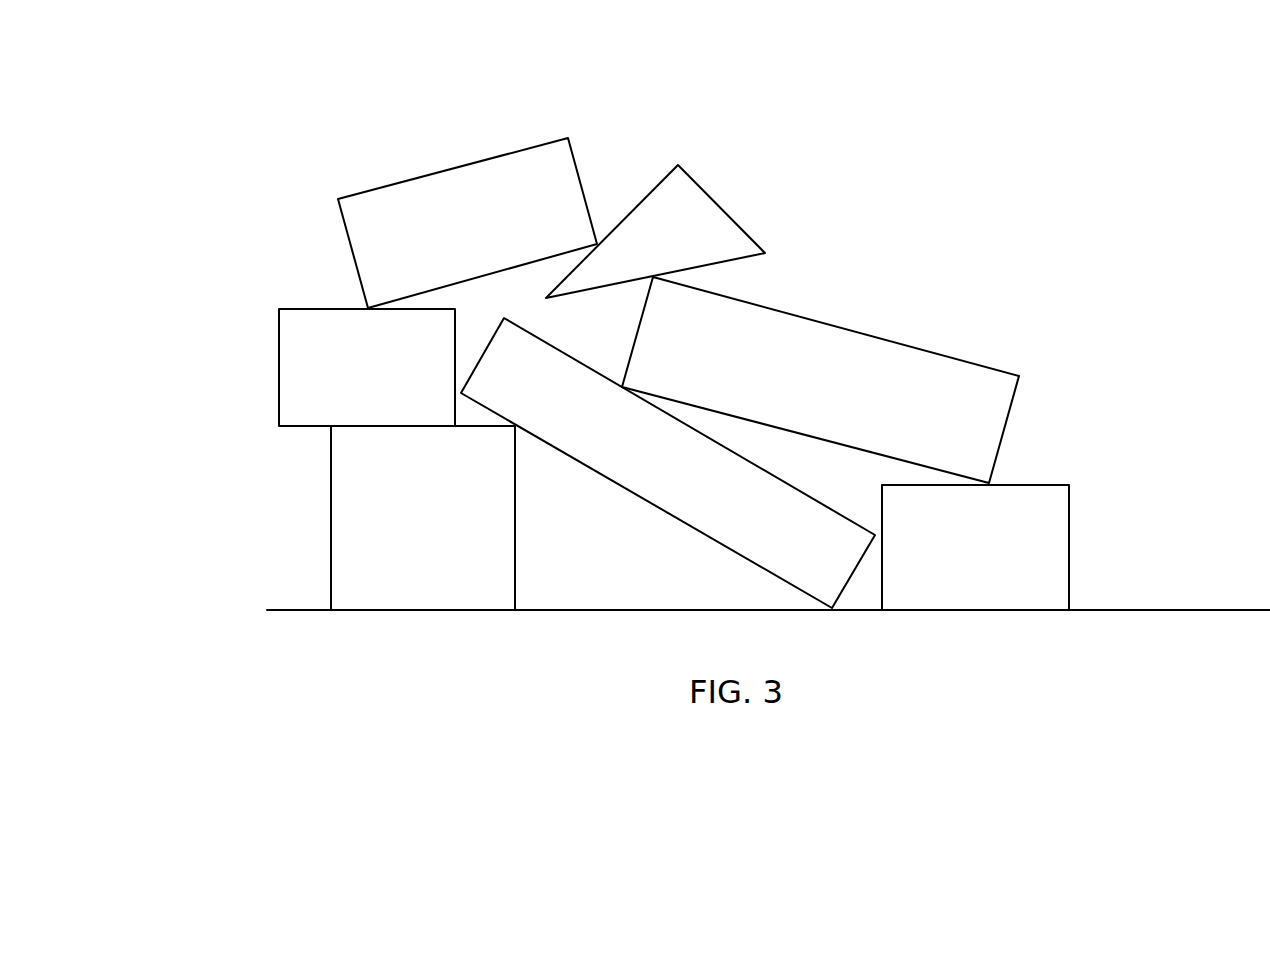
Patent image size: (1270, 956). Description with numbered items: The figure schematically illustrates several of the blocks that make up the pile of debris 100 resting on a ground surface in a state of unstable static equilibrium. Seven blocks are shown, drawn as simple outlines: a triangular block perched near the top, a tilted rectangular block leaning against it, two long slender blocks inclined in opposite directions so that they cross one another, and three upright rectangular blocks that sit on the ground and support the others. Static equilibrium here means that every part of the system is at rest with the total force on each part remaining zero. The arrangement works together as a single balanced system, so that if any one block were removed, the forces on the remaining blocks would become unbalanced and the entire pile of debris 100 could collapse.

The pile of debris 100 is at (290, 116).